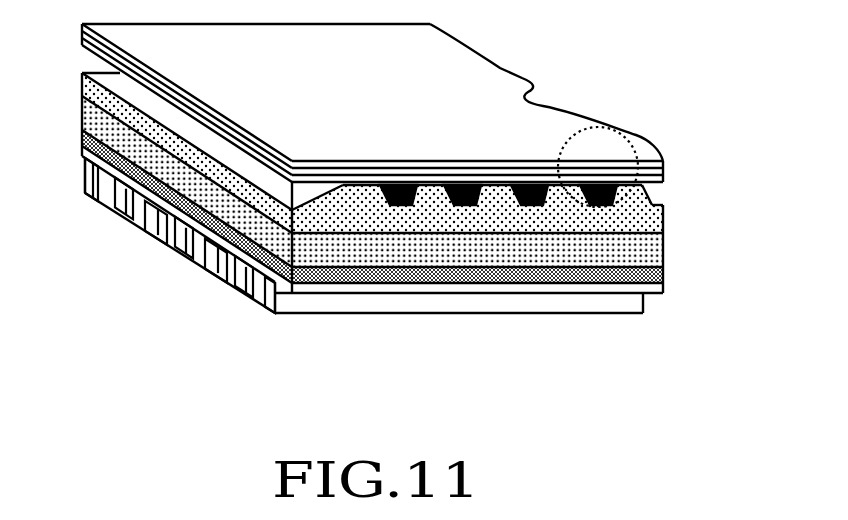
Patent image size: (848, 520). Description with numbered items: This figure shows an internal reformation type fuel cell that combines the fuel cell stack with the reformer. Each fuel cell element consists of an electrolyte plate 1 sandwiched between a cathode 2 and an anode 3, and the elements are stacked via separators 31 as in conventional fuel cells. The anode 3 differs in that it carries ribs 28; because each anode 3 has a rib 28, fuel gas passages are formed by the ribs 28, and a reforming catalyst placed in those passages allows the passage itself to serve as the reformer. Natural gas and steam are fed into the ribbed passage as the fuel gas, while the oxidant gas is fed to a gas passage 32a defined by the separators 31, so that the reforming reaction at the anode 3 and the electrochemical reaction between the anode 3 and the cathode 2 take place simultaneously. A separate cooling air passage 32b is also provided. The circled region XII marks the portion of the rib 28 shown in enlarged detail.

The electrolyte plate 1 is at (652, 248).
The cathode 2 is at (656, 274).
The anode 3 is at (652, 221).
The rib 28 is at (656, 196).
The separator 31 is at (448, 307).
The gas passage 32a is at (144, 212).
The cooling air passage 32b is at (234, 264).
The detail region XII is at (588, 138).